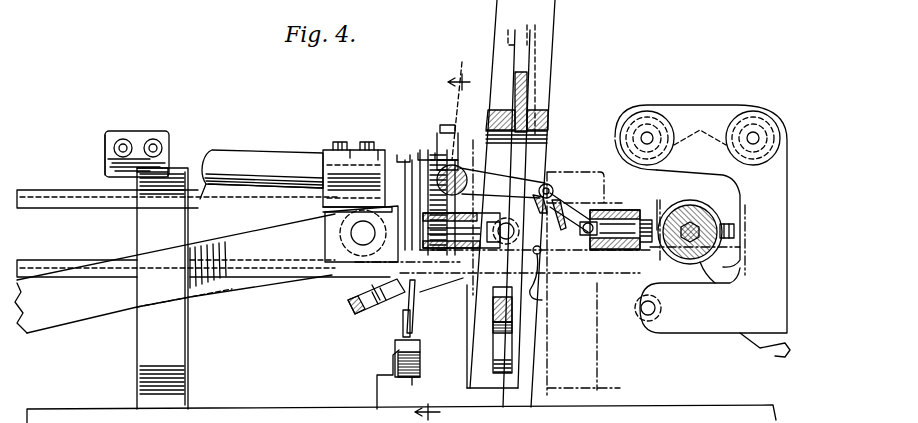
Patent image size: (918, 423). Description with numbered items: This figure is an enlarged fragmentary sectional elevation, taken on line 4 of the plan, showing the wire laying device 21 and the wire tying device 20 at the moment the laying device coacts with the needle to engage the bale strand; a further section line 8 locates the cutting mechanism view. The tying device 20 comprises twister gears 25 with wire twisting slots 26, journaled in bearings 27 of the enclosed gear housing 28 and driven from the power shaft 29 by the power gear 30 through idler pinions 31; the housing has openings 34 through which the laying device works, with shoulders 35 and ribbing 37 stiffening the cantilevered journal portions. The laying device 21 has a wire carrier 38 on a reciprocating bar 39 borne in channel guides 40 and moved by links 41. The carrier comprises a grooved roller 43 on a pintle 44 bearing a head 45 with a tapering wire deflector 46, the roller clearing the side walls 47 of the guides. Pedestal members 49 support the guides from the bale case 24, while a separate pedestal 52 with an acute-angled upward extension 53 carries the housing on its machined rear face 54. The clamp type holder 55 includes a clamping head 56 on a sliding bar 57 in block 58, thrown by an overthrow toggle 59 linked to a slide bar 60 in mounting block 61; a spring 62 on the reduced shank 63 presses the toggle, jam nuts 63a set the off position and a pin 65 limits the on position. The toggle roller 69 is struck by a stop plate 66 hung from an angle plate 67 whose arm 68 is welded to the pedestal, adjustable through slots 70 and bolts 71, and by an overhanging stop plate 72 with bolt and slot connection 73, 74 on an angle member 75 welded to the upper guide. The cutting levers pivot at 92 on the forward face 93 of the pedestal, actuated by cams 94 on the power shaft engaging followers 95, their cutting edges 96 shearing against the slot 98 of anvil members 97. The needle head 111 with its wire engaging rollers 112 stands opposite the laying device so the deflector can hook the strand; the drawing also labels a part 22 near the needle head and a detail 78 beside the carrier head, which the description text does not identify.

The section line 4— 4 is at (427, 413).
The section line 8— 8 is at (455, 109).
The wire tying device 20 is at (474, 15).
The wire laying device 21 is at (333, 267).
The pulley bracket 22 is at (701, 208).
The bale case 24 is at (250, 408).
The tying gear 25 is at (512, 318).
The gear slot 26 is at (505, 353).
The journal bearing 27 is at (482, 375).
The gear housing 28 is at (548, 68).
The power shaft 29 is at (250, 150).
The power gear 30 is at (510, 45).
The idler pinion 31 is at (410, 380).
The housing opening 34 is at (535, 145).
The housing shoulder 35 is at (548, 118).
The ribbing 37 is at (527, 92).
The wire carrier 38 is at (726, 212).
The reciprocating bar 39 is at (330, 214).
The channel guide 40 is at (38, 180).
The link 41 is at (76, 310).
The roller 43 is at (682, 260).
The pintle 44 is at (710, 275).
The head 45 is at (693, 200).
The wire deflector 46 is at (655, 210).
The side wall 47 is at (200, 195).
The pedestal member 49 is at (186, 350).
The pedestal 52 is at (378, 384).
The upward extension 53 is at (450, 322).
The rear face 54 is at (512, 340).
The clamp type holder 55 is at (570, 214).
The clamping head 56 is at (646, 244).
The sliding bar 57 is at (626, 235).
The block 58 is at (592, 238).
The overthrow toggle 59 is at (540, 185).
The slide bar 60 is at (475, 205).
The mounting block 61 is at (527, 246).
The spring 62 is at (445, 248).
The shank 63 is at (490, 248).
The jam nuts 63a is at (407, 264).
The pin 65 is at (549, 282).
The stop plate 66 is at (108, 176).
The angle plate 67 is at (108, 150).
The arm 68 is at (158, 168).
The roller 69 is at (462, 150).
The longitudinal slot 70 is at (123, 138).
The securing bolt 71 is at (153, 138).
The stop plate 72 is at (345, 150).
The bolt 73 is at (362, 160).
The slot 74 is at (344, 142).
The angle member 75 is at (325, 168).
The set screw 78 is at (736, 232).
The pivot 92 is at (396, 343).
The forward face 93 is at (402, 320).
The cam 94 is at (440, 128).
The follower 95 is at (437, 140).
The cutting edge 96 is at (350, 314).
The anvil member 97 is at (365, 297).
The slot 98 is at (365, 288).
The needle head frame 111 is at (690, 328).
The wire engaging roller 112 is at (700, 128).